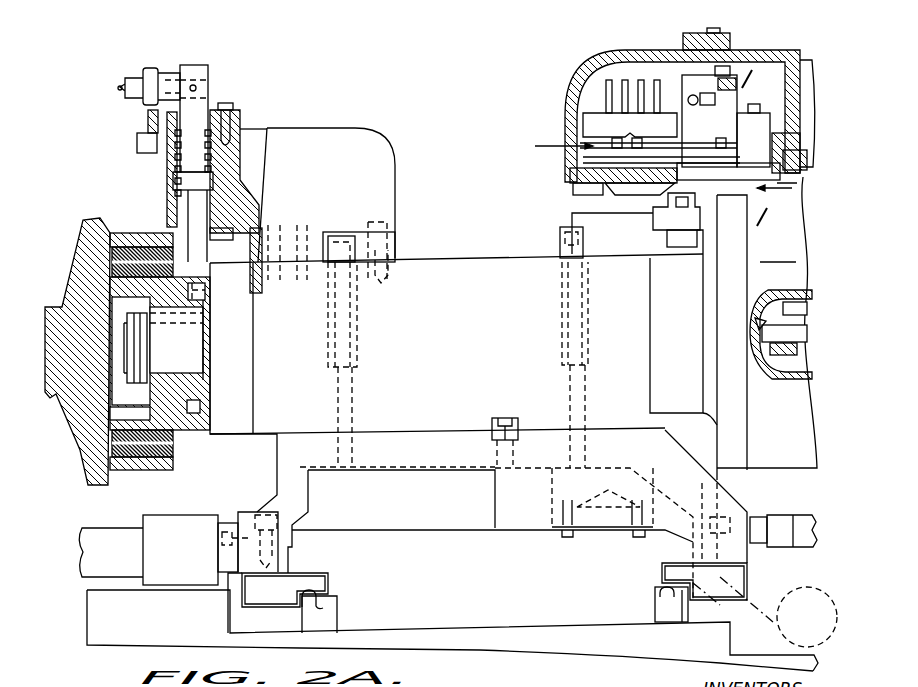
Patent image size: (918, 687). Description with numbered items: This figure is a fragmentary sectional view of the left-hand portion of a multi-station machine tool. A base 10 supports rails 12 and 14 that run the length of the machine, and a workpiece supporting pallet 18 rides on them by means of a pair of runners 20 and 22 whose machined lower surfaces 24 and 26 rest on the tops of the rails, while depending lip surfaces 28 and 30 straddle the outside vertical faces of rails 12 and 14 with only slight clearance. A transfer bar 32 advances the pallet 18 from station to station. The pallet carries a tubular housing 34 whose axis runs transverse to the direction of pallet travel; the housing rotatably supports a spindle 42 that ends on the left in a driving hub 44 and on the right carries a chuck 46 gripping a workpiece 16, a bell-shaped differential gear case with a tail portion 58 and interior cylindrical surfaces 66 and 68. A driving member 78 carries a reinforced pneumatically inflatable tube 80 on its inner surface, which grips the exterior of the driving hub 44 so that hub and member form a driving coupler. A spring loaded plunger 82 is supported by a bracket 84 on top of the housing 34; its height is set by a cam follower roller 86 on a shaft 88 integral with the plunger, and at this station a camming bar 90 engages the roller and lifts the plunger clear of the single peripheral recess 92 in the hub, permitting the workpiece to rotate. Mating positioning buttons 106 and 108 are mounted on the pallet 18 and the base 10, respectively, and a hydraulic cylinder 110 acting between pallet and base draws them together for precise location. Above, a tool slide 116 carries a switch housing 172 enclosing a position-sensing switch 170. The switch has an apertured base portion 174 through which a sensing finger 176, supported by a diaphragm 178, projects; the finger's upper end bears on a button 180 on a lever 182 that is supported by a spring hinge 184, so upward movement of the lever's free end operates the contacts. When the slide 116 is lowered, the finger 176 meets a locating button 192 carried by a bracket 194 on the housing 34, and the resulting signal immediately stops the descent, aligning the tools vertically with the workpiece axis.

The base 10 is at (110, 632).
The rail 12 is at (330, 614).
The rail 14 is at (660, 603).
The workpiece 16 is at (803, 296).
The workpiece supporting pallet 18 is at (505, 541).
The runner 20 is at (310, 575).
The runner 22 is at (673, 577).
The machined lower surface 24 is at (320, 598).
The machined lower surface 26 is at (662, 592).
The lip surface 28 is at (305, 610).
The lip surface 30 is at (683, 600).
The transfer bar 32 is at (782, 638).
The tubular housing 34 is at (415, 272).
The spindle 42 is at (195, 342).
The driving hub 44 is at (180, 392).
The chuck 46 is at (778, 252).
The tail portion 58 is at (790, 370).
The cylindrical surface 66 is at (762, 338).
The cylindrical surface 68 is at (758, 322).
The driving member 78 is at (88, 240).
The pneumatically inflatable tube 80 is at (156, 455).
The spring loaded plunger 82 is at (190, 222).
The bracket 84 is at (312, 135).
The cam follower roller 86 is at (152, 70).
The shaft 88 is at (210, 82).
The camming bar 90 is at (150, 112).
The peripheral recess 92 is at (203, 291).
The positioning button 106 is at (762, 545).
The positioning button 108 is at (800, 541).
The hydraulic cylinder 110 is at (118, 508).
The tool slide 116 is at (758, 337).
The position-sensing switch 170 is at (546, 149).
The switch housing 172 is at (638, 50).
The apertured base portion 174 is at (632, 186).
The sensing finger 176 is at (622, 255).
The diaphragm 178 is at (652, 196).
The button 180 is at (647, 170).
The lever 182 is at (695, 150).
The spring hinge 184 is at (578, 166).
The locating button 192 is at (690, 185).
The bracket 194 is at (618, 254).